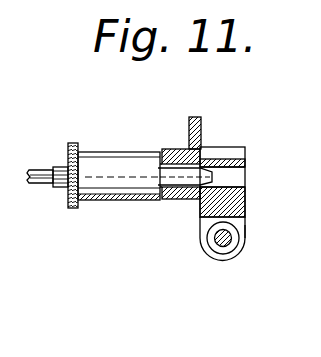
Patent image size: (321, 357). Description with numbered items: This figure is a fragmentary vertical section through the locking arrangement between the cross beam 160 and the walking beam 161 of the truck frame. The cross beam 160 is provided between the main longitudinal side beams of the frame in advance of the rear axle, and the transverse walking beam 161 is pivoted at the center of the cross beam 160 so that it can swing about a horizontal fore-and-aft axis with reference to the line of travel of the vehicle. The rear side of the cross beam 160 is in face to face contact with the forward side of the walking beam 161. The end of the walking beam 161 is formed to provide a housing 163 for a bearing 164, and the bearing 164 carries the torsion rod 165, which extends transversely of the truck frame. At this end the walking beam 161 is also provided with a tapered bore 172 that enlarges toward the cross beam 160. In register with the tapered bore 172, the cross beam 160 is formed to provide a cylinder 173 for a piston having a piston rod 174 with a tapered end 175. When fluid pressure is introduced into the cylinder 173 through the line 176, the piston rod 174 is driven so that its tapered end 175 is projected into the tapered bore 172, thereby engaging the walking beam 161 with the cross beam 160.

The cross beam 160 is at (193, 116).
The walking beam 161 is at (248, 210).
The housing 163 is at (208, 262).
The bearing 164 is at (223, 255).
The torsion rod 165 is at (242, 245).
The tapered bore 172 is at (232, 173).
The cylinder 173 is at (124, 152).
The piston rod 174 is at (137, 200).
The tapered end 175 is at (198, 206).
The line 176 is at (40, 170).